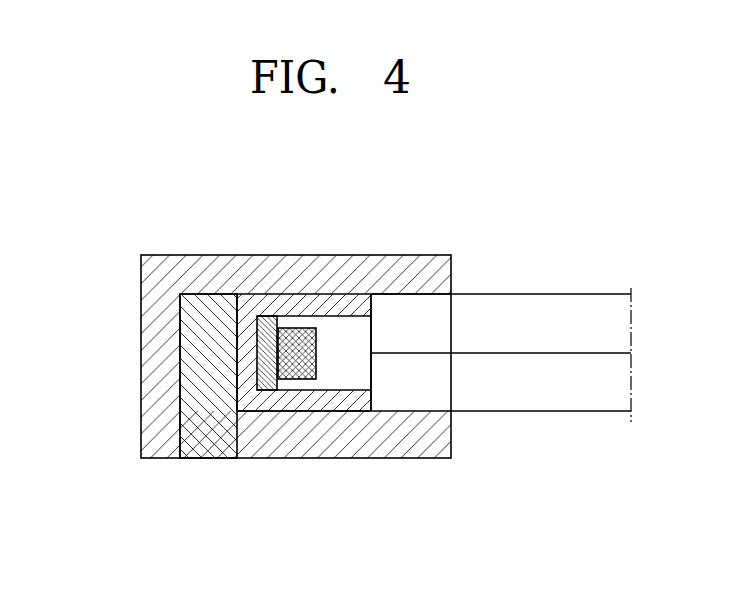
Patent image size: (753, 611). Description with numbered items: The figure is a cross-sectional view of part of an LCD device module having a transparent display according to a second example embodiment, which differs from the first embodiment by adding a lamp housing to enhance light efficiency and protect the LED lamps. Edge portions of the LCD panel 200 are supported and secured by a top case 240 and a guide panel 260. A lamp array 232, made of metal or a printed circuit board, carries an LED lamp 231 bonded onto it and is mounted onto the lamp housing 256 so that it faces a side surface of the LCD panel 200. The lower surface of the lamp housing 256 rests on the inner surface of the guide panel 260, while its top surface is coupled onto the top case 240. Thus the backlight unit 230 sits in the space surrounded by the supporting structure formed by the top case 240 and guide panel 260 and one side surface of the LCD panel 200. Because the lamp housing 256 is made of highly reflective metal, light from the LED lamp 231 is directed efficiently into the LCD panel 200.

The LCD panel 200 is at (580, 283).
The backlight unit 230 is at (237, 527).
The LED lamp 231 is at (302, 372).
The lamp array 232 is at (267, 383).
The top case 240 is at (160, 443).
The lamp housing 256 is at (347, 403).
The guide panel 260 is at (415, 443).